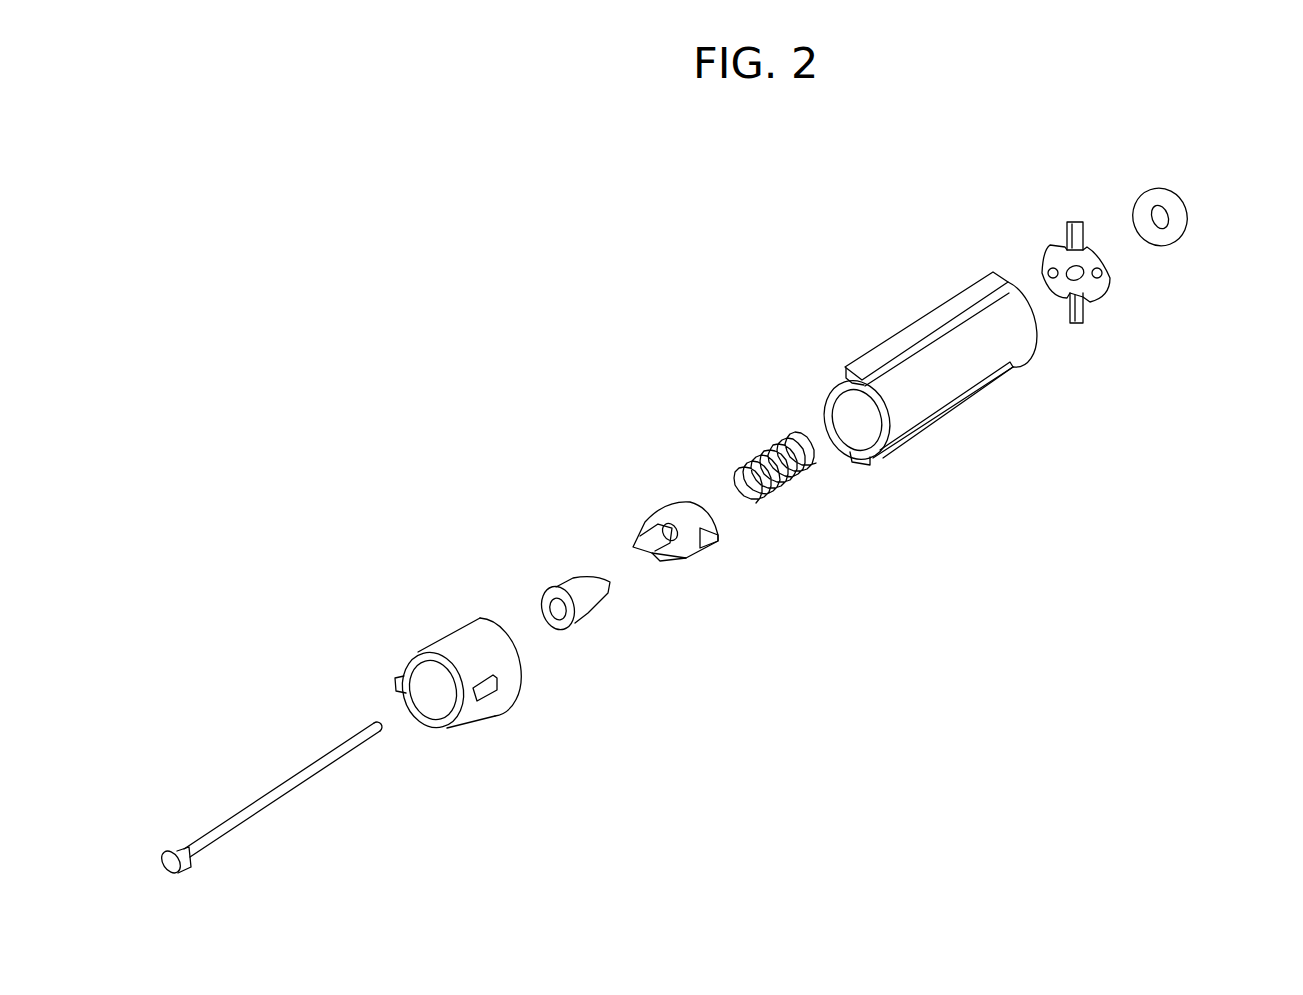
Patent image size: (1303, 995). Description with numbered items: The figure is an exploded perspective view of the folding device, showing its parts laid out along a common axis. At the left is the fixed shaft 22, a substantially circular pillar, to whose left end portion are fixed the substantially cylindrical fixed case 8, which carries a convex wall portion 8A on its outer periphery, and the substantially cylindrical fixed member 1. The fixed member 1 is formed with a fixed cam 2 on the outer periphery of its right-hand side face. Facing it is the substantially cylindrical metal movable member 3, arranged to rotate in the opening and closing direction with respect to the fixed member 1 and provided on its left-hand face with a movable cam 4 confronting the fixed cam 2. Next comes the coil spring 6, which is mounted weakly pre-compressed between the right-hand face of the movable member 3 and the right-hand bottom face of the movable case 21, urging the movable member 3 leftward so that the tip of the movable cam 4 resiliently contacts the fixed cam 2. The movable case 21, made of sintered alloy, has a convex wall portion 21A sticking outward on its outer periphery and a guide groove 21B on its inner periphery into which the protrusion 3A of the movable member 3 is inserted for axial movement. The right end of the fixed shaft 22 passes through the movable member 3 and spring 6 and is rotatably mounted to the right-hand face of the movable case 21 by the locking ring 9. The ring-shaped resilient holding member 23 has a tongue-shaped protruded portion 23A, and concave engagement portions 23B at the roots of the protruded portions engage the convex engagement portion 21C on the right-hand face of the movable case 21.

The fixed member 1 is at (617, 639).
The fixed cam 2 is at (600, 592).
The movable member 3 is at (724, 541).
The protrusion 3A is at (719, 537).
The movable cam 4 is at (681, 557).
The coil spring 6 is at (770, 450).
The fixed case 8 is at (455, 682).
The convex wall portion 8A is at (488, 698).
The locking ring 9 is at (1145, 187).
The movable case 21 is at (992, 401).
The convex wall portion 21A is at (920, 330).
The guide groove 21B is at (883, 447).
The convex engagement portion 21C is at (1040, 335).
The fixed shaft 22 is at (310, 762).
The holding member 23 is at (1127, 253).
The protruded portion 23A is at (1070, 223).
The concave engagement portion 23B is at (1082, 295).